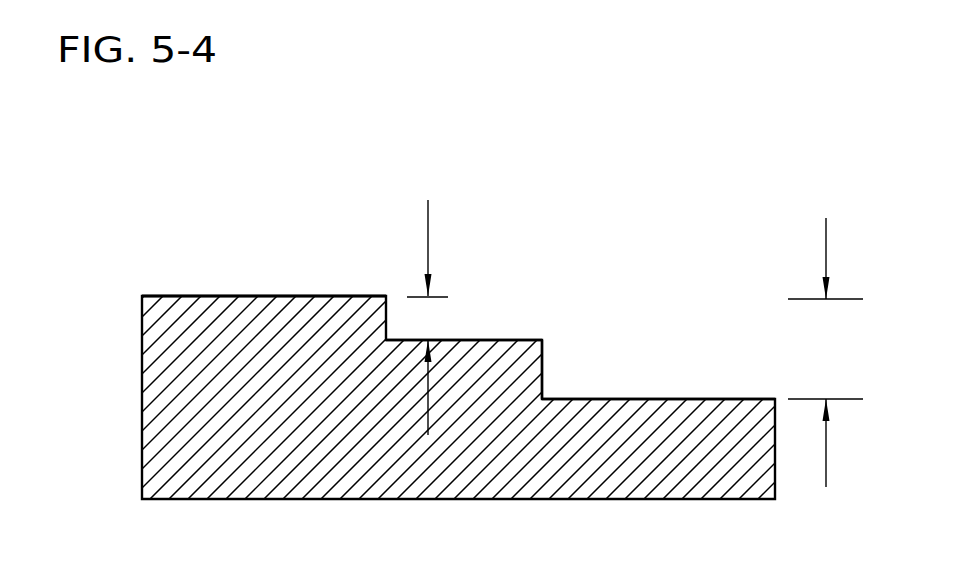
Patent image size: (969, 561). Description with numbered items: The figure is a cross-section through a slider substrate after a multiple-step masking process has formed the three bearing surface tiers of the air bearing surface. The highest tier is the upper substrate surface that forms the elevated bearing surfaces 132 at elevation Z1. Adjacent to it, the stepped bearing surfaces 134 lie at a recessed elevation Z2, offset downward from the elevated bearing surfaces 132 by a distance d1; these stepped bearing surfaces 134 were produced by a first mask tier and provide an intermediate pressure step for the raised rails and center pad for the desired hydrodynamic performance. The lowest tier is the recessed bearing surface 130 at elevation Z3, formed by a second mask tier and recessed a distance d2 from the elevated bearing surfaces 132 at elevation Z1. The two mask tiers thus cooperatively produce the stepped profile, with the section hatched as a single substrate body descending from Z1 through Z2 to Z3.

The recessed bearing surface 130 is at (600, 365).
The elevated bearing surfaces 132 is at (188, 265).
The stepped bearing surfaces 134 is at (540, 309).
The elevation of raised bearing surface Z1 is at (287, 296).
The recessed elevation of offset bearing surfaces Z2 is at (468, 340).
The elevation of recessed bearing surface Z3 is at (707, 399).
The offset distance of stepped bearing surfaces d1 is at (428, 233).
The recess distance of recessed bearing surface d2 is at (826, 233).